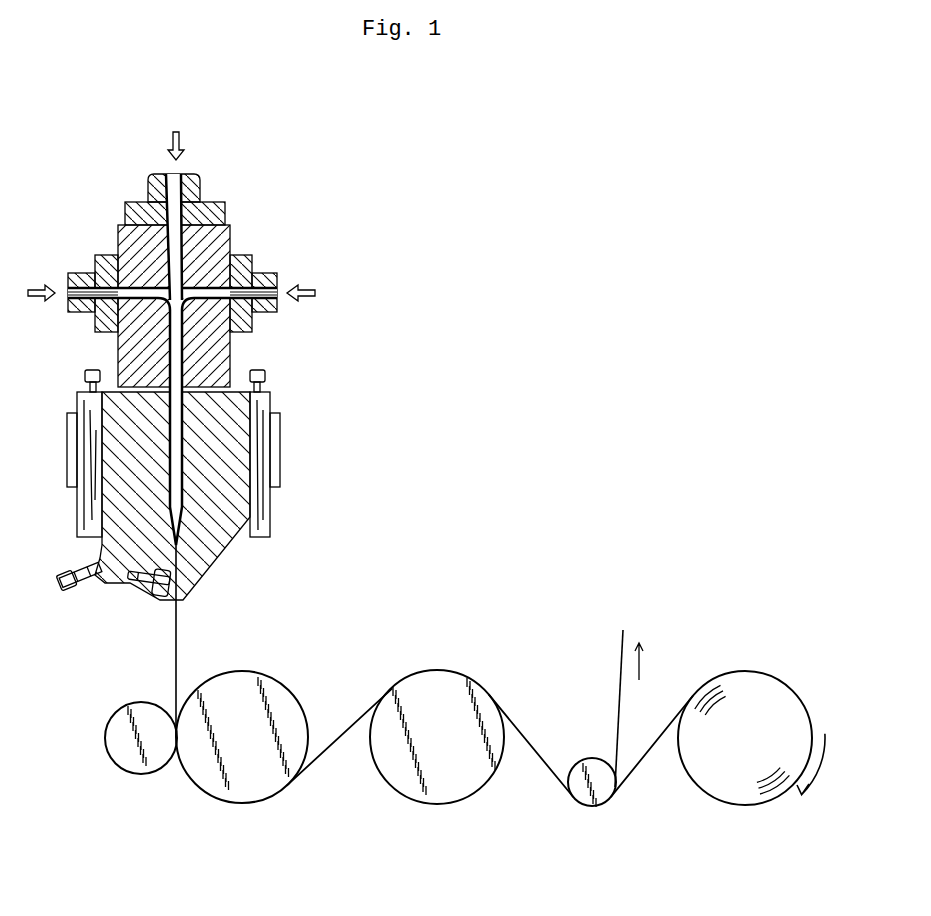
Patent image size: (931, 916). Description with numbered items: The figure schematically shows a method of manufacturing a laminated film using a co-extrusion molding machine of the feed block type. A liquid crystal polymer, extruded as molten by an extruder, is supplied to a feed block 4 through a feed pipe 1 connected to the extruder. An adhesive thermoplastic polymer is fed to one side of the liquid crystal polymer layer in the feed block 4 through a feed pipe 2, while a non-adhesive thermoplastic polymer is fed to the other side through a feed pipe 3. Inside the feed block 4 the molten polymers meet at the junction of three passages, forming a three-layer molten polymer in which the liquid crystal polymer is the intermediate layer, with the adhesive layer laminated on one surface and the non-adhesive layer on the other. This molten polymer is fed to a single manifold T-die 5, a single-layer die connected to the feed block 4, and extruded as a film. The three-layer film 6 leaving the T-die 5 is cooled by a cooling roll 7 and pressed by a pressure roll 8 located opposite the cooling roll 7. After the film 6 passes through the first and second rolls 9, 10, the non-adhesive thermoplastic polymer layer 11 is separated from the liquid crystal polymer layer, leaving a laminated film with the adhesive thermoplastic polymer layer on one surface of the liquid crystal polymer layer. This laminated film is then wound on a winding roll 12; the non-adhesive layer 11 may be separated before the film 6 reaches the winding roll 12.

The feed pipe 1 is at (202, 187).
The feed pipe 2 is at (87, 278).
The feed pipe 3 is at (258, 273).
The feed block 4 is at (215, 350).
The single manifold T-die 5 is at (217, 527).
The three-layer film 6 is at (177, 633).
The cooling roll 7 is at (258, 687).
The pressure roll 8 is at (130, 718).
The first roll 9 is at (447, 788).
The second roll 10 is at (592, 802).
The non-adhesive thermoplastic polymer layer 11 is at (617, 680).
The winding roll 12 is at (770, 683).